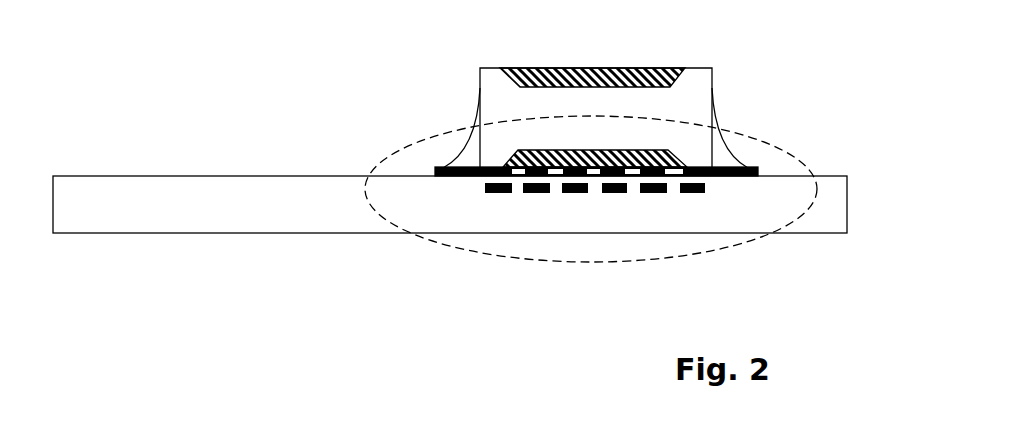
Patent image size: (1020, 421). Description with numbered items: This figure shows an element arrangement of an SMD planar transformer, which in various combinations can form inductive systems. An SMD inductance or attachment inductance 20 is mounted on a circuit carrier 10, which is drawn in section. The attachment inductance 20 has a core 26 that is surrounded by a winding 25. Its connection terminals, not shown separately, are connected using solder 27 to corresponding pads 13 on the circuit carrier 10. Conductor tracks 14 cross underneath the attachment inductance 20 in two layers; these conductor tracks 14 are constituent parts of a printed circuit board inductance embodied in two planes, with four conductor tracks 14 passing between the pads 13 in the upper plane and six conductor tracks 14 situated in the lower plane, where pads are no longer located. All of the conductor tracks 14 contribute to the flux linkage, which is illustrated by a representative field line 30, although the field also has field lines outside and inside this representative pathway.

The circuit carrier 10 is at (152, 197).
The pads 13 is at (743, 178).
The conductor tracks 14 is at (647, 203).
The attachment inductance 20 is at (623, 84).
The winding 25 is at (660, 63).
The core 26 is at (687, 85).
The solder 27 is at (733, 140).
The representative field line 30 is at (382, 143).